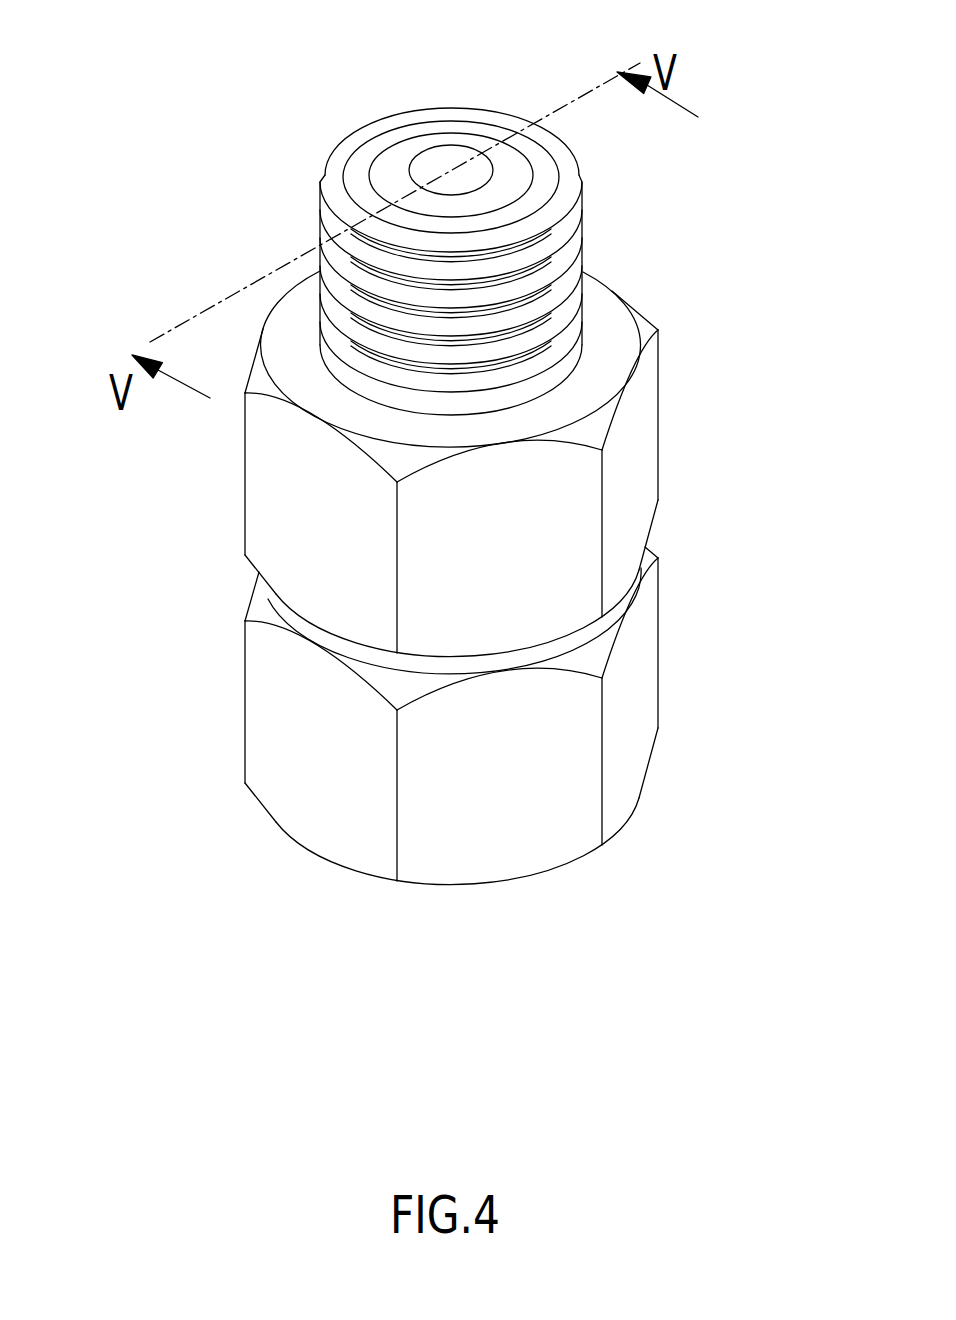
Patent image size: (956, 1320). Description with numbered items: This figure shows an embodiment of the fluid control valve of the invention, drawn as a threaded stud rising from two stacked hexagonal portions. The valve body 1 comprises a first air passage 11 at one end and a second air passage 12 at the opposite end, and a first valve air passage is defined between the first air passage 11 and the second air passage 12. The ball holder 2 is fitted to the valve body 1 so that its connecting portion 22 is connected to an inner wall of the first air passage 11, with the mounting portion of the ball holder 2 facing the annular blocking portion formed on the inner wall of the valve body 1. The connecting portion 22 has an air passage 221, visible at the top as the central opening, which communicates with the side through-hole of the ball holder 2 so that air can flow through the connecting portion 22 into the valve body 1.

The adapter 1 is at (705, 428).
The upper hexagonal portion 11 is at (300, 128).
The lower hexagonal portion 12 is at (567, 893).
The threaded stud 2 is at (398, 140).
The top end face 22 is at (517, 182).
The central bore 221 is at (440, 155).